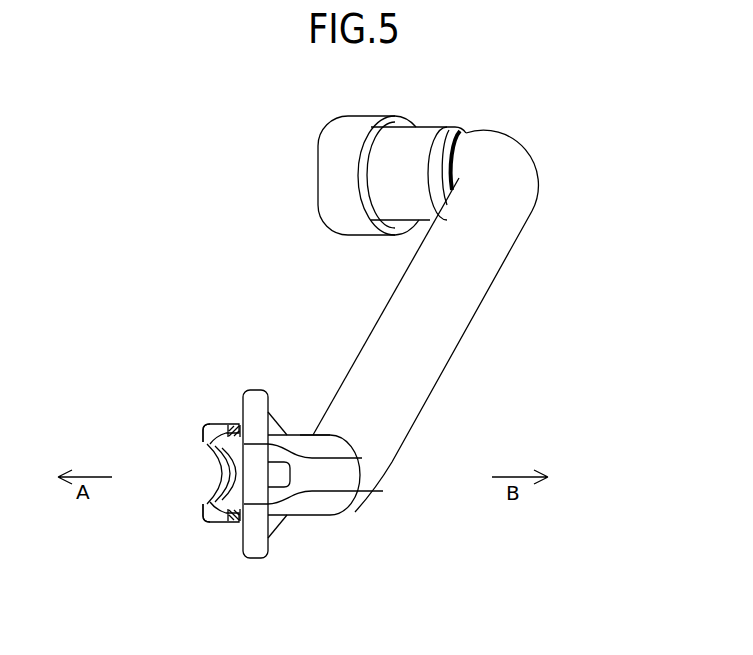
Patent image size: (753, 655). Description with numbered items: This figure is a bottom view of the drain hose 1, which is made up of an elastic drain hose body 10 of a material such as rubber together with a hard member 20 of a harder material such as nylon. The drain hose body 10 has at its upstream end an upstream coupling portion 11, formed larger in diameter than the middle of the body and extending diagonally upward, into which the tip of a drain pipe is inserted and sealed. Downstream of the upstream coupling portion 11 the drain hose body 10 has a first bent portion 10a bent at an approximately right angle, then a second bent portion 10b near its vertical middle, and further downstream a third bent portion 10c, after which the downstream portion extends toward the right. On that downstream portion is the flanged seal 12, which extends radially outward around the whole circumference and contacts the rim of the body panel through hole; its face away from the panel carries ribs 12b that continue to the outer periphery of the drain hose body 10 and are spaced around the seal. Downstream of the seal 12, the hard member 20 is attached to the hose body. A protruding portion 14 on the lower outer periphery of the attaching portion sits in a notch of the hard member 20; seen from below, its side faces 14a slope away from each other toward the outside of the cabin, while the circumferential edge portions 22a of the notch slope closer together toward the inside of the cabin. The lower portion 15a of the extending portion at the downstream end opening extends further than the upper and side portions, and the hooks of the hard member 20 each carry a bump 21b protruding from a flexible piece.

The drain hose 1 is at (586, 110).
The drain hose body 10 is at (525, 229).
The first bent portion 10a is at (534, 160).
The second bent portion 10b is at (353, 515).
The third bent portion 10c is at (345, 436).
The upstream coupling portion 11 is at (431, 127).
The seal 12 is at (253, 390).
The ribs 12b is at (283, 427).
The protruding portion 14 is at (207, 480).
The side faces 14a is at (362, 458).
The lower portion 15a is at (207, 468).
The hard member 20 is at (164, 447).
The bump 21b is at (233, 425).
The circumferential edge portions 22a is at (205, 508).